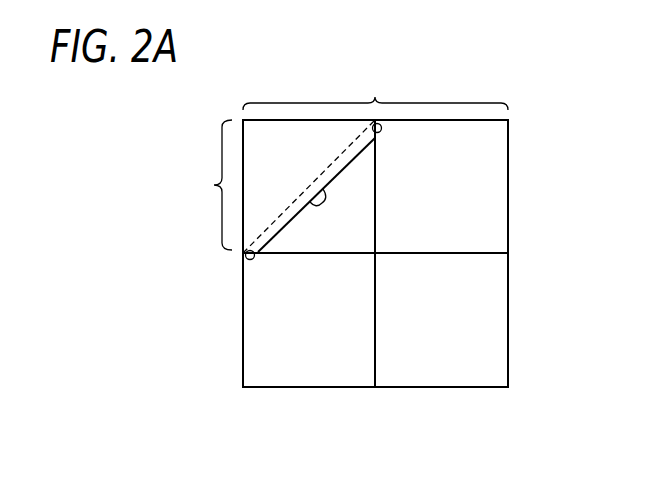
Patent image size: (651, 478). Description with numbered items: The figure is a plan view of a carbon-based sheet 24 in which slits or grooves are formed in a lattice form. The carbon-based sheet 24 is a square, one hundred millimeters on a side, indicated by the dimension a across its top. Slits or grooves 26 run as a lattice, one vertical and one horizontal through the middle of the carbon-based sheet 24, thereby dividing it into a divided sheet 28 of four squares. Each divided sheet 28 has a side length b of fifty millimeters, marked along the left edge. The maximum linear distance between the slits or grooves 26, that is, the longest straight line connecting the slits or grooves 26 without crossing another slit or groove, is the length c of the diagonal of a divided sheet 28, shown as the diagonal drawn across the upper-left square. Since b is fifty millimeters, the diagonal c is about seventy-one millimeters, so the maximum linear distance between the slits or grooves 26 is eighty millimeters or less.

The carbon-based sheet 24 is at (538, 106).
The slits or grooves 26 is at (445, 255).
The divided sheet 28 is at (460, 188).